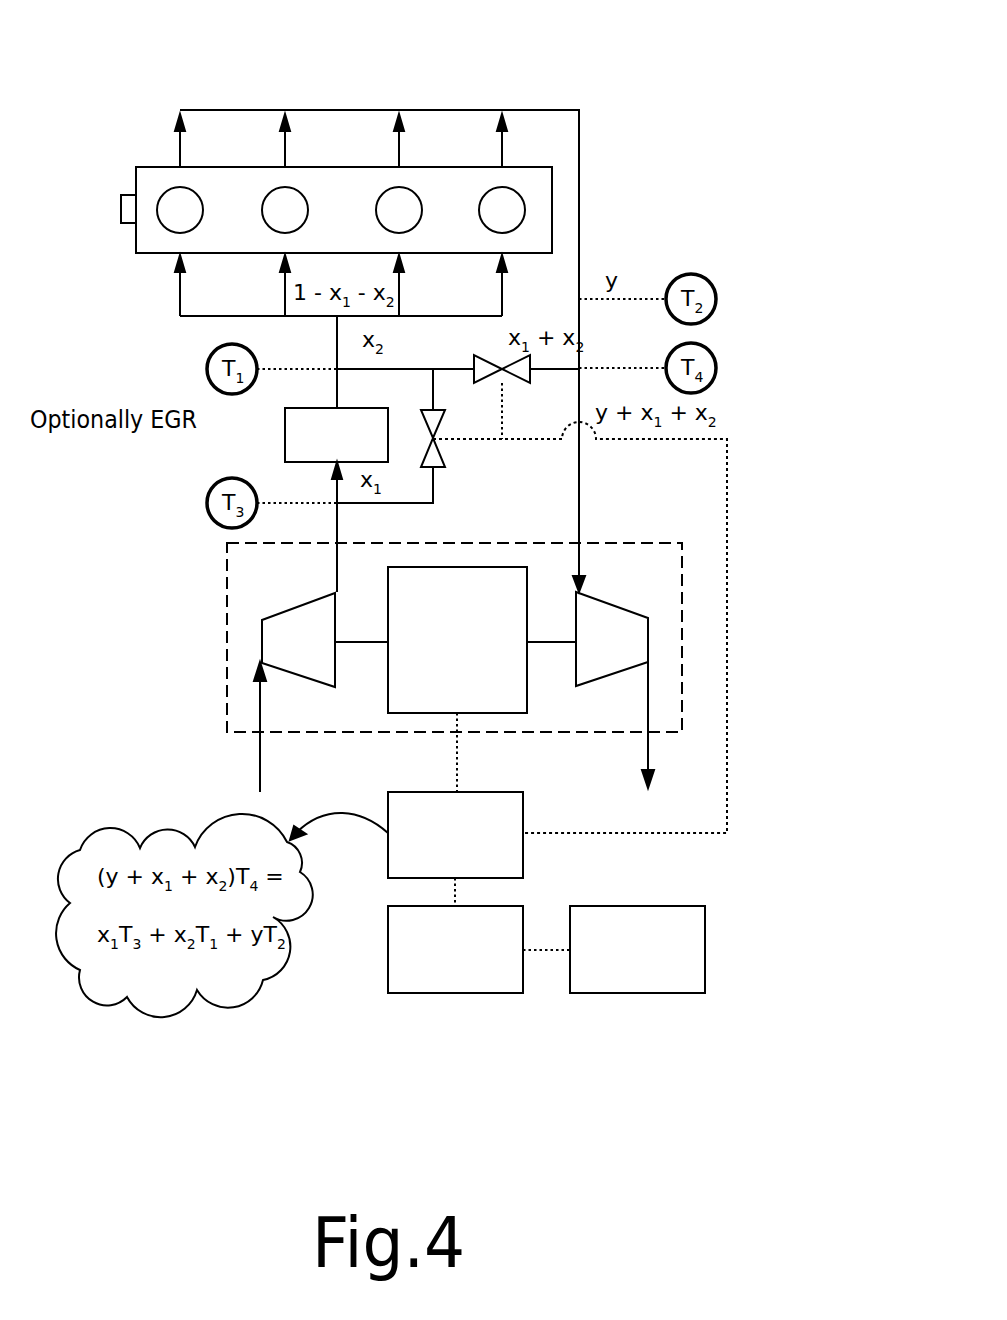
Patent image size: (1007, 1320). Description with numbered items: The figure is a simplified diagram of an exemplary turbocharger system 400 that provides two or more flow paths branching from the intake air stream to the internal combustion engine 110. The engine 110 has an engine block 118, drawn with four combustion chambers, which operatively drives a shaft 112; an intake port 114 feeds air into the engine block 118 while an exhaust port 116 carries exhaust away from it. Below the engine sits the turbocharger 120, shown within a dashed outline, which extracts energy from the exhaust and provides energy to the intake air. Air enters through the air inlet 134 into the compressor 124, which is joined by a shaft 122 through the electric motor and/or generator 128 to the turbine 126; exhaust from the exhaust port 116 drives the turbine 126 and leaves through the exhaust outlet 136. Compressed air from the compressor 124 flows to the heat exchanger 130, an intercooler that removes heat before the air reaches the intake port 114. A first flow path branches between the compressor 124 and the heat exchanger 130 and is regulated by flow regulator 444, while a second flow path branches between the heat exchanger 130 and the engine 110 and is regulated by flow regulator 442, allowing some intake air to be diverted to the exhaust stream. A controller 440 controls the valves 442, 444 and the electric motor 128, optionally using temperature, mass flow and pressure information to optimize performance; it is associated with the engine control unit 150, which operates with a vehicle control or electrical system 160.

The system 400 is at (612, 44).
The internal combustion engine 110 is at (137, 167).
The shaft 112 is at (121, 195).
The intake port 114 is at (179, 316).
The exhaust port 116 is at (353, 110).
The engine block 118 is at (341, 210).
The turbocharger 120 is at (454, 637).
The shaft 122 is at (366, 645).
The compressor 124 is at (298, 640).
The turbine 126 is at (612, 639).
The electric motor and/or generator 128 is at (457, 640).
The heat exchanger 130 is at (336, 435).
The air inlet 134 is at (258, 745).
The exhaust outlet 136 is at (645, 757).
The engine control unit 150 is at (455, 949).
The vehicle control or electrical system 160 is at (637, 949).
The controller 440 is at (455, 835).
The flow regulator 442 is at (475, 357).
The flow regulator 444 is at (444, 467).